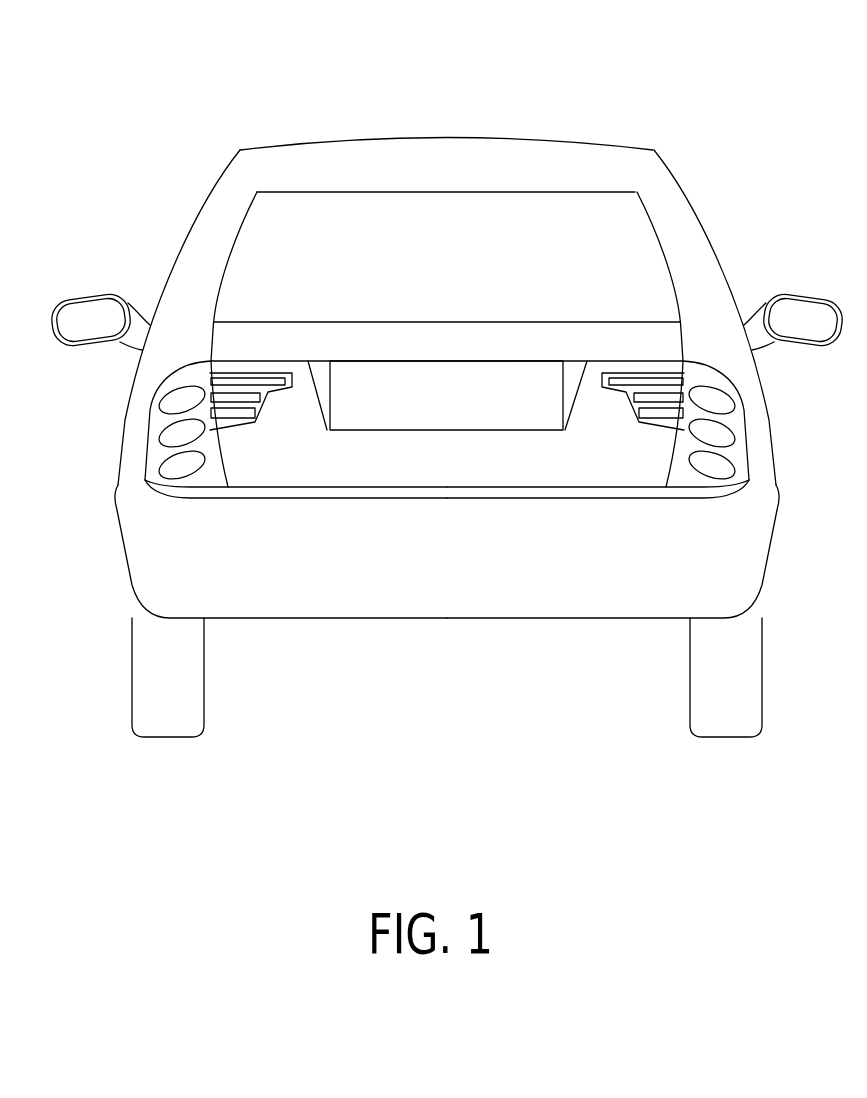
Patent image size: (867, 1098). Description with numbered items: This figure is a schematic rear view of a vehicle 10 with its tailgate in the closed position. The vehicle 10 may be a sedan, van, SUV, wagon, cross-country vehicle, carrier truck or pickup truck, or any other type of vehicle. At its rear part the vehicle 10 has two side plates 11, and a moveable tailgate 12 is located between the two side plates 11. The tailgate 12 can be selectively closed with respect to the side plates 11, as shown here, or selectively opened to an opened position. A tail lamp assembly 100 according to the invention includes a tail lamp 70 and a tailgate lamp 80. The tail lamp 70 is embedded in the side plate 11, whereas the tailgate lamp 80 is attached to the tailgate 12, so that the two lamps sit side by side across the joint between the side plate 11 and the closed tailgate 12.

The vehicle 10 is at (734, 88).
The side plate 11 is at (132, 440).
The tailgate 12 is at (317, 460).
The tail lamp 70 is at (205, 480).
The tailgate lamp 80 is at (235, 422).
The tail lamp assembly 100 is at (333, 790).